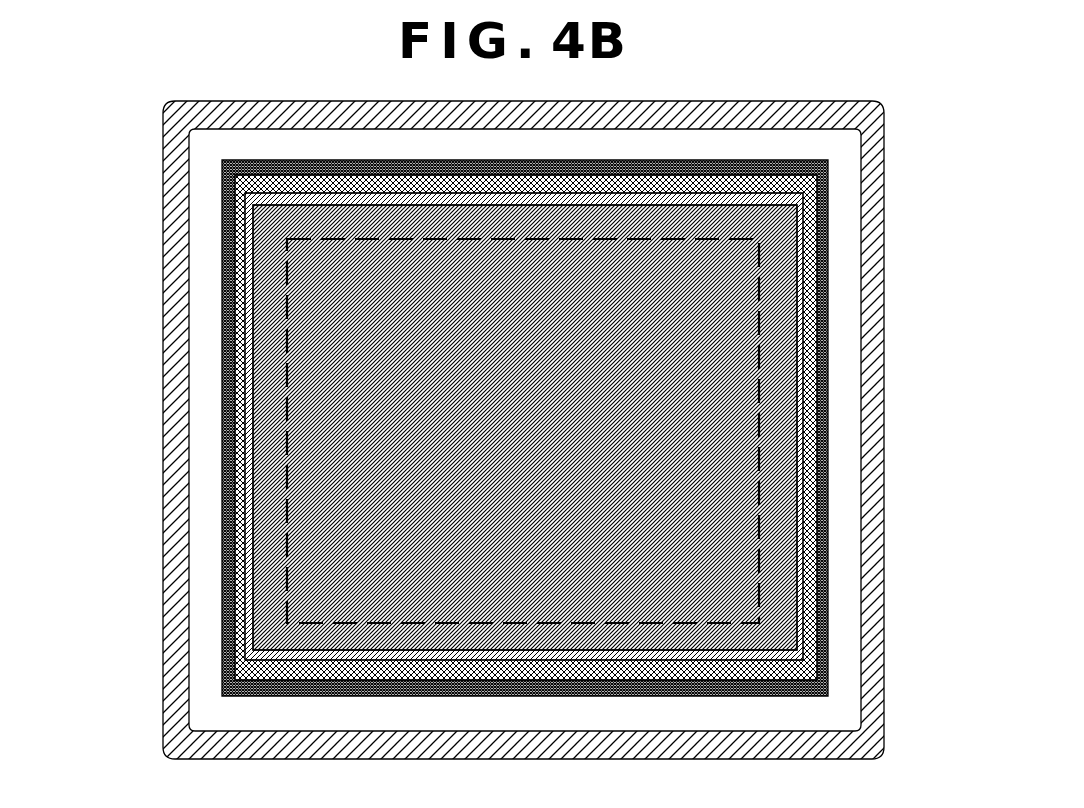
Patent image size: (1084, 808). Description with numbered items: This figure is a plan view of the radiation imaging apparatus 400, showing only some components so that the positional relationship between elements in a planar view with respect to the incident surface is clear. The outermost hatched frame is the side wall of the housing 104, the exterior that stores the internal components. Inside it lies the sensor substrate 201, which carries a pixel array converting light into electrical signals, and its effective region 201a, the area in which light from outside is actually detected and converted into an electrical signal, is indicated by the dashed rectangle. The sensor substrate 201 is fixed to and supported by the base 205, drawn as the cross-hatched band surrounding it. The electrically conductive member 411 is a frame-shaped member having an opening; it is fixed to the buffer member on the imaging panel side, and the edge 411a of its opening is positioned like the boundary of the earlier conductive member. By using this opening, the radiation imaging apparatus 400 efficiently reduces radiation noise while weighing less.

The radiation imaging apparatus 400 is at (189, 67).
The housing 104 is at (183, 243).
The electrically conductive member 411 is at (228, 294).
The base 205 is at (232, 331).
The sensor substrate 201 is at (224, 363).
The effective region 201a is at (285, 398).
The edge of the opening of the electrically conductive member 411a is at (226, 461).